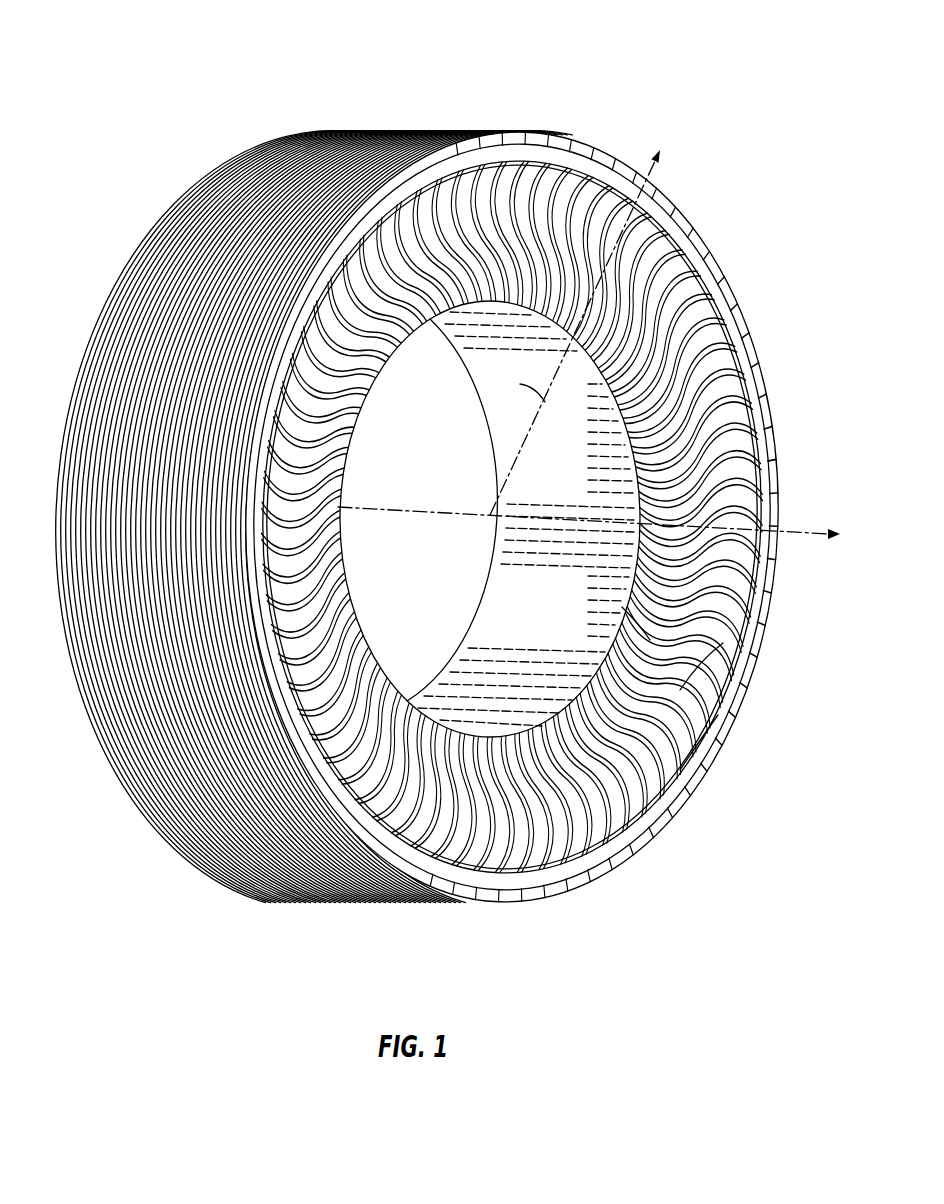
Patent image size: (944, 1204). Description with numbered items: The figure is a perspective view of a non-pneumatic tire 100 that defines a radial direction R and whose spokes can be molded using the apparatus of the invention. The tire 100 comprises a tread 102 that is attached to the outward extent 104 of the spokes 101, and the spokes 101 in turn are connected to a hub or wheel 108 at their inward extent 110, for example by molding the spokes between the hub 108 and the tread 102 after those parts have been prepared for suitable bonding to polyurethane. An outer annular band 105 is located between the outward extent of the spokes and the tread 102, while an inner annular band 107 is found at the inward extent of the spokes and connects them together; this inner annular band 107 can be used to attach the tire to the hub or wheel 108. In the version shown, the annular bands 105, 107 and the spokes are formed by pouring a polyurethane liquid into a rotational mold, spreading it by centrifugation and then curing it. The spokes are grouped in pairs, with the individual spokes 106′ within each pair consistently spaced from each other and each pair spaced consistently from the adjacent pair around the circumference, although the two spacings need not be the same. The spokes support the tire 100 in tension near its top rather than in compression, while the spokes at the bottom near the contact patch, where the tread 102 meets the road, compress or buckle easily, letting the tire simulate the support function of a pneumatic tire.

The tire 100 is at (757, 58).
The spokes 101 is at (672, 265).
The tread 102 is at (360, 890).
The outward extent of the spokes 104 is at (593, 863).
The outer annular band 105 is at (757, 562).
The spoke 106′ is at (718, 715).
The inner annular band 107 is at (733, 378).
The hub or wheel 108 is at (580, 497).
The inward extent of the spokes 110 is at (622, 607).